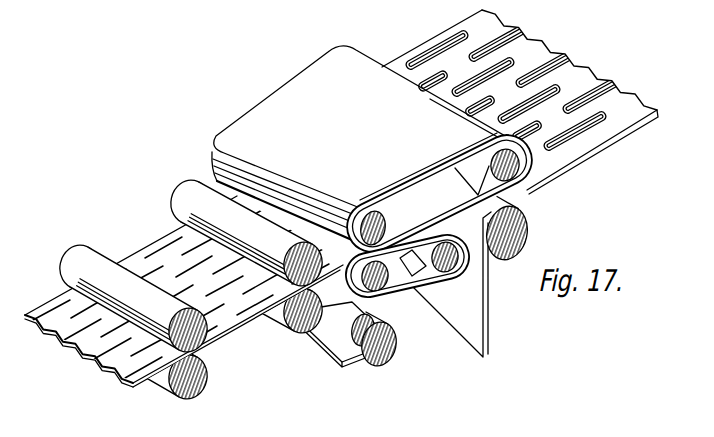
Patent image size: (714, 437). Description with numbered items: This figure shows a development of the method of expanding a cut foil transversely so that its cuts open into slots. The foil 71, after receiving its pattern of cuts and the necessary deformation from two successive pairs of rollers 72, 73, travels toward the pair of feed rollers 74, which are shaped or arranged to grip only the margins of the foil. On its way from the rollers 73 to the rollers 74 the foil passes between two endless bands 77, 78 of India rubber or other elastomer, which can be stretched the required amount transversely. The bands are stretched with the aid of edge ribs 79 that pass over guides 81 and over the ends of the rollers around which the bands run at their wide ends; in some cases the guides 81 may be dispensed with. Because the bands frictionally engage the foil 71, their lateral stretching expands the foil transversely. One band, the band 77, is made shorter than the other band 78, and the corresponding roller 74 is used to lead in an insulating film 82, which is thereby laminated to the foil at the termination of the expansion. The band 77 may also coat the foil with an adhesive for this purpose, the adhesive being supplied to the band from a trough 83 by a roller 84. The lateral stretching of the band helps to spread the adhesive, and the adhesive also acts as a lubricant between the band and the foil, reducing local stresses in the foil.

The foil 71 is at (68, 368).
The pair of rollers 72 is at (198, 331).
The pair of rollers 73 is at (282, 308).
The feed rollers 74 is at (513, 173).
The endless band 77 is at (406, 283).
The endless band 78 is at (292, 98).
The edge ribs 79 is at (447, 222).
The guides 81 is at (418, 252).
The insulating film 82 is at (472, 313).
The trough 83 is at (378, 350).
The roller 84 is at (341, 364).